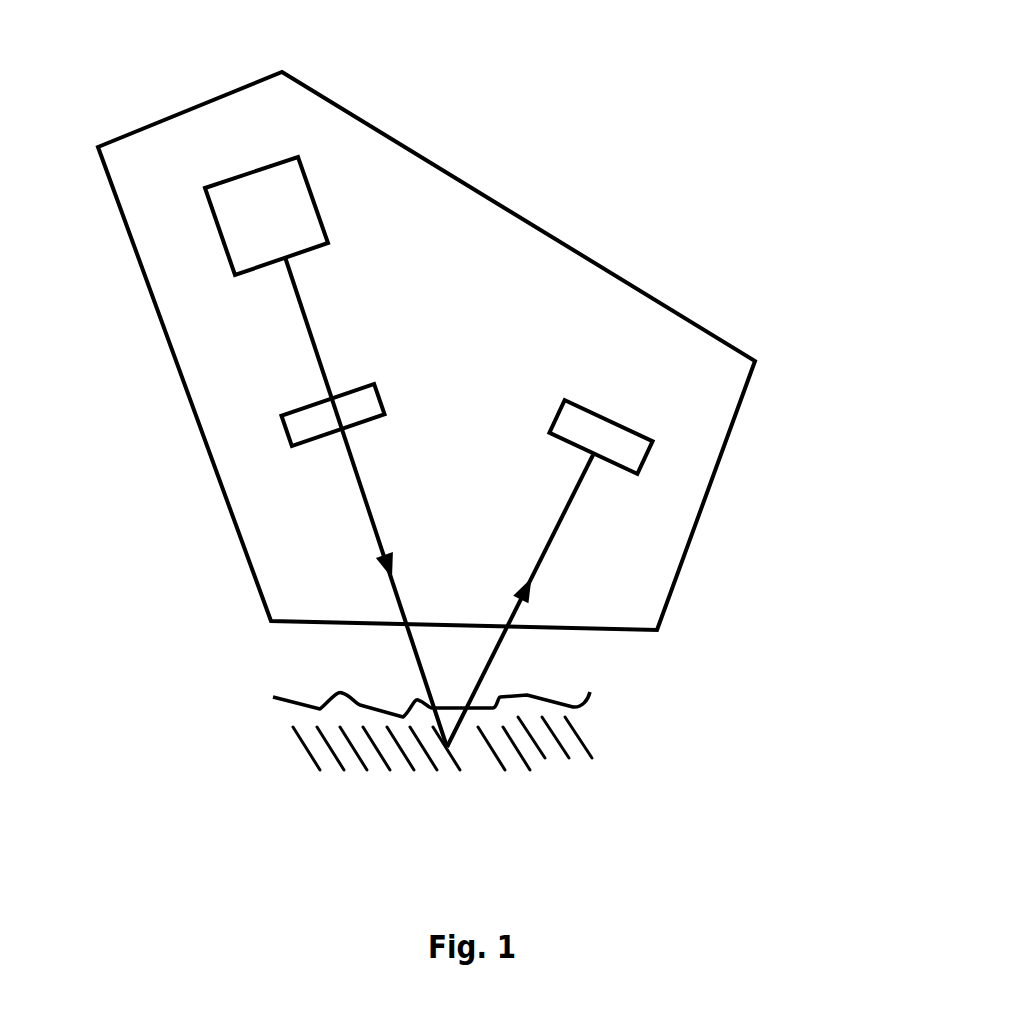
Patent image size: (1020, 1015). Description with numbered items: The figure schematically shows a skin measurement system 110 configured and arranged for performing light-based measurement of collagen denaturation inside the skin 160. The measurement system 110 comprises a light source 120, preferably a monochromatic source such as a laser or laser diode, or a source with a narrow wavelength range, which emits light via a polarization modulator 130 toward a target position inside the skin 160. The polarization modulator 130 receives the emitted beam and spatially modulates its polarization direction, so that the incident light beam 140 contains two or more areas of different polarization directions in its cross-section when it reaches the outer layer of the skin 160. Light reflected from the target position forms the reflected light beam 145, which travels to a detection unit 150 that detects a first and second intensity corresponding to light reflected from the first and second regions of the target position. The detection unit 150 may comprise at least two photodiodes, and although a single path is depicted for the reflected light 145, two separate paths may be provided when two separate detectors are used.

The skin measurement system 110 is at (124, 92).
The light source 120 is at (220, 242).
The polarization modulator 130 is at (350, 390).
The incident light beam 140 is at (440, 670).
The reflected light beam 145 is at (490, 669).
The detection unit 150 is at (633, 428).
The skin 160 is at (602, 698).